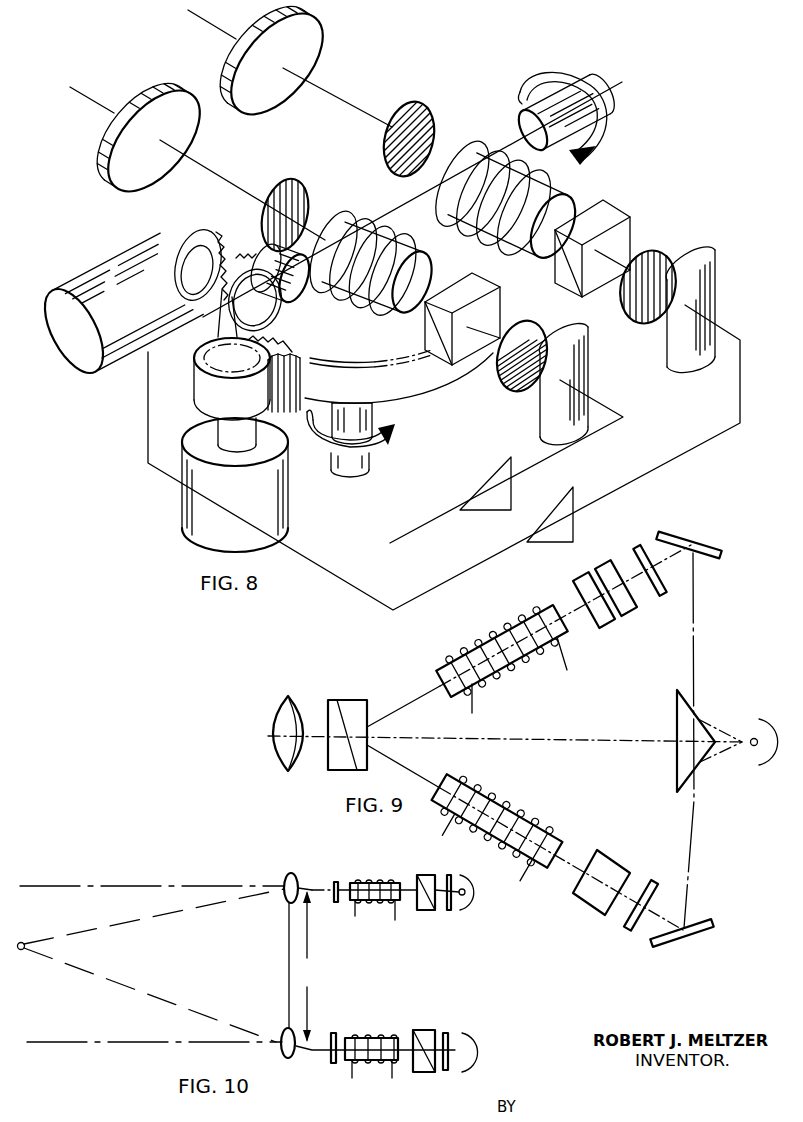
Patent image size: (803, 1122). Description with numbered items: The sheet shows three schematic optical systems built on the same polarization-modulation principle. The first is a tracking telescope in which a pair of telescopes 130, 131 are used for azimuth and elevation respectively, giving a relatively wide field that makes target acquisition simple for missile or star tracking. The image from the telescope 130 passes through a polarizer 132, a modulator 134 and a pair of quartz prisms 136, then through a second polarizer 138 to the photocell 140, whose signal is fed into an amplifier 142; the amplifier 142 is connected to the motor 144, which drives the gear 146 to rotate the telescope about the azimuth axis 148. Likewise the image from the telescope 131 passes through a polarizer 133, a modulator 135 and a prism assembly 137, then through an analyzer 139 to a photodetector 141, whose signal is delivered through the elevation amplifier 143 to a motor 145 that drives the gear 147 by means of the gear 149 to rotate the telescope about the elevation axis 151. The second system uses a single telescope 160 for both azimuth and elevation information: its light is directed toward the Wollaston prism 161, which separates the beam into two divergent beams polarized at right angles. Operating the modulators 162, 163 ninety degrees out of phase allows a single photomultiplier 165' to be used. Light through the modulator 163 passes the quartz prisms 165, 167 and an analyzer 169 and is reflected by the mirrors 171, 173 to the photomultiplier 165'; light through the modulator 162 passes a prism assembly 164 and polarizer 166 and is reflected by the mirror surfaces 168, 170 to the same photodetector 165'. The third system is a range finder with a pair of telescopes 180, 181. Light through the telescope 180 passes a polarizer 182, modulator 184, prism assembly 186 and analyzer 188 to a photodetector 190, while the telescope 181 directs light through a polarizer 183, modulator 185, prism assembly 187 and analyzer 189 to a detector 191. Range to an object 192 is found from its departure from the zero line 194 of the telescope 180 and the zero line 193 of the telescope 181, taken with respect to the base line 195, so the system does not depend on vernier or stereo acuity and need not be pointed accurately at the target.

In FIG. 8, the telescope 130 is at (164, 88).
In FIG. 8, the telescope 131 is at (266, 22).
In FIG. 8, the polarizer 132 is at (300, 184).
In FIG. 8, the polarizer 133 is at (423, 113).
In FIG. 8, the modulator 134 is at (396, 242).
In FIG. 8, the modulator 135 is at (560, 187).
In FIG. 8, the pair of quartz prisms 136 is at (484, 277).
In FIG. 8, the prism assembly 137 is at (612, 213).
In FIG. 8, the second polarizer 138 is at (530, 326).
In FIG. 8, the analyzer 139 is at (662, 247).
In FIG. 8, the photocell 140 is at (584, 378).
In FIG. 8, the photodetector 141 is at (715, 274).
In FIG. 8, the amplifier 142 is at (497, 464).
In FIG. 8, the elevation amplifier 143 is at (546, 520).
In FIG. 8, the motor 144 is at (250, 507).
In FIG. 8, the motor 145 is at (103, 378).
In FIG. 8, the gear 146 is at (248, 375).
In FIG. 8, the gear 147 is at (283, 307).
In FIG. 8, the azimuth axis 148 is at (370, 465).
In FIG. 8, the gear 149 is at (212, 241).
In FIG. 8, the elevation axis 151 is at (600, 113).
In FIG. 9, the telescope 160 is at (298, 680).
In FIG. 9, the Wollaston prism 161 is at (347, 700).
In FIG. 9, the modulator 162 is at (485, 796).
In FIG. 9, the modulator 163 is at (523, 662).
In FIG. 9, the prism assembly 164 is at (598, 850).
In FIG. 9, the quartz prism 165 is at (597, 615).
In FIG. 9, the photomultiplier 165' is at (759, 732).
In FIG. 9, the polarizer 166 is at (645, 879).
In FIG. 9, the quartz prism 167 is at (632, 613).
In FIG. 9, the mirror surface 168 is at (690, 921).
In FIG. 9, the analyzer 169 is at (652, 597).
In FIG. 9, the mirror surface 170 is at (682, 788).
In FIG. 9, the mirror 171 is at (713, 547).
In FIG. 9, the mirror 173 is at (688, 703).
In FIG. 10, the telescope 180 is at (285, 1030).
In FIG. 10, the telescope 181 is at (289, 902).
In FIG. 10, the polarizer 182 is at (332, 1037).
In FIG. 10, the polarizer 183 is at (337, 903).
In FIG. 10, the modulator 184 is at (362, 1038).
In FIG. 10, the modulator 185 is at (370, 906).
In FIG. 10, the prism assembly 186 is at (417, 1030).
In FIG. 10, the prism assembly 187 is at (418, 911).
In FIG. 10, the analyzer 188 is at (447, 1033).
In FIG. 10, the analyzer 189 is at (449, 911).
In FIG. 10, the photodetector 190 is at (478, 1040).
In FIG. 10, the detector 191 is at (478, 898).
In FIG. 10, the object 192 is at (18, 950).
In FIG. 10, the zero line 193 is at (80, 889).
In FIG. 10, the zero line 194 is at (42, 1042).
In FIG. 10, the base line 195 is at (311, 966).